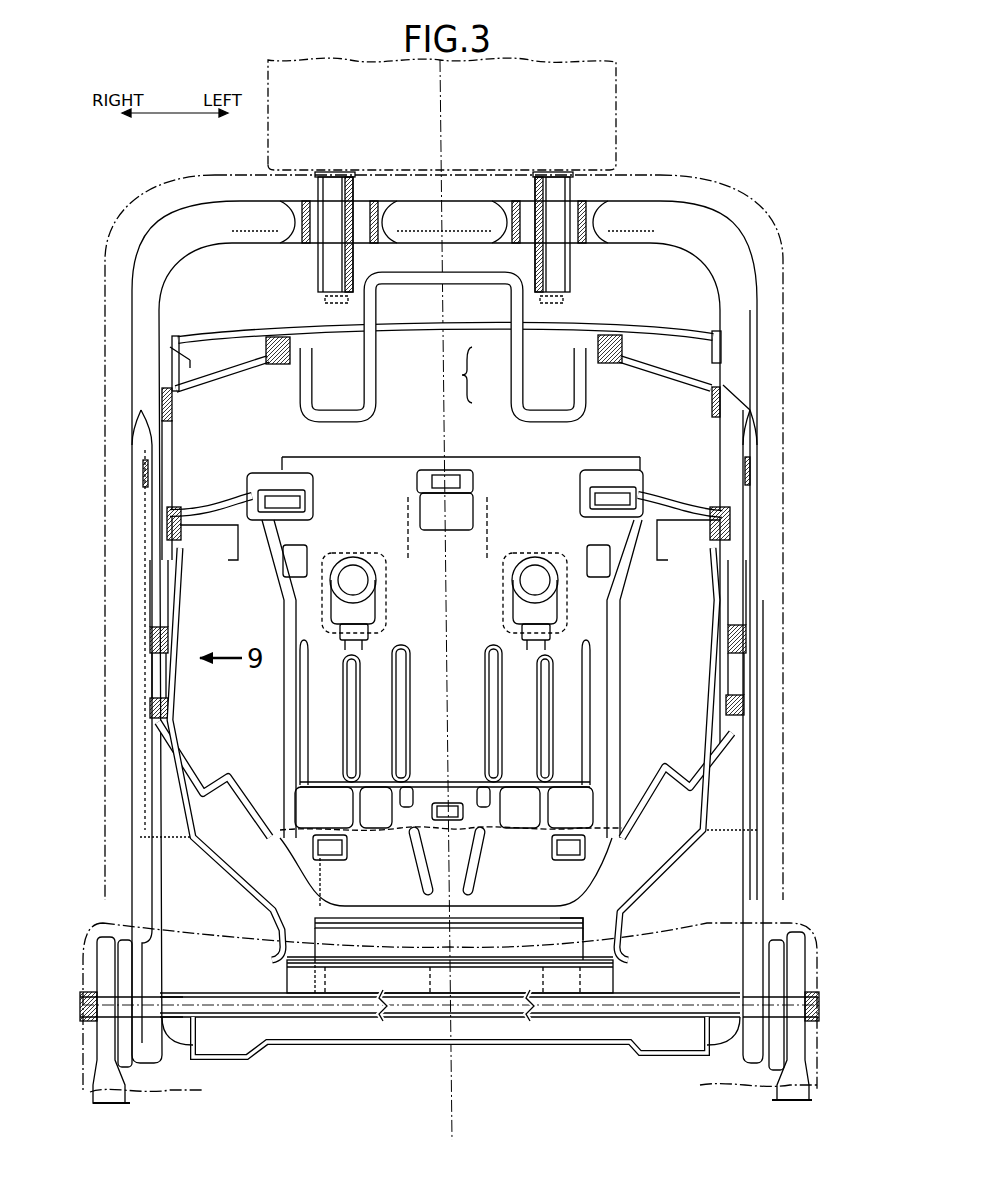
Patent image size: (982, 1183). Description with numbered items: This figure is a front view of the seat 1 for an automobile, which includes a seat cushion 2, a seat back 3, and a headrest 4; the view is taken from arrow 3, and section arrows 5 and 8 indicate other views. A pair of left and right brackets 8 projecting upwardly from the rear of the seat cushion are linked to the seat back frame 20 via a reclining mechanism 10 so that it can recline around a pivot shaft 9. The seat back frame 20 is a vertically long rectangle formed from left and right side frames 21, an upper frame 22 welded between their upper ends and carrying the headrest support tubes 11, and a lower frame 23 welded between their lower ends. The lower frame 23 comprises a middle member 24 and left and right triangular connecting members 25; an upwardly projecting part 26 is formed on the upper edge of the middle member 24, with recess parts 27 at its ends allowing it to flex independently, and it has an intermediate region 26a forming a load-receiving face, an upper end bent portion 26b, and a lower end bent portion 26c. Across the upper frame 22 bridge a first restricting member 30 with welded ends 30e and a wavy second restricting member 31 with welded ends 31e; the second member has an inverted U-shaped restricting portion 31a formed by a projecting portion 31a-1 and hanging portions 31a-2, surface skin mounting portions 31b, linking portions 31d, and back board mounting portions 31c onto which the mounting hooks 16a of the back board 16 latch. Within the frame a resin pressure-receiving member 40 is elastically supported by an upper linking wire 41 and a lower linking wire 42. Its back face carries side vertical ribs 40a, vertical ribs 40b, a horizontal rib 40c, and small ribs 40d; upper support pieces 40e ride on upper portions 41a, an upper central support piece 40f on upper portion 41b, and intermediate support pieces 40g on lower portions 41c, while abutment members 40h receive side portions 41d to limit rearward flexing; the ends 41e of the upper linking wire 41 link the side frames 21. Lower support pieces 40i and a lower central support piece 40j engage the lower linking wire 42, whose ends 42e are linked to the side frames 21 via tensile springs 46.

The seat 1 is at (667, 135).
The seat cushion 2 is at (720, 916).
The seat back 3 is at (795, 627).
The headrest 4 is at (619, 93).
The section line V-V 5 is at (400, 93).
The bracket 8 is at (122, 580).
The pivot shaft 9 is at (557, 972).
The reclining mechanism 10 is at (761, 1063).
The headrest support tube 11 is at (321, 276).
The back board 16 is at (168, 318).
The mounting hook 16a is at (279, 340).
The seat back frame 20 is at (461, 608).
The side frame 21 is at (112, 672).
The upper frame 22 is at (660, 180).
The lower frame 23 is at (544, 1053).
The middle member 24 is at (410, 982).
The connecting member 25 is at (230, 893).
The projecting part 26 is at (387, 910).
The intermediate region 26a is at (360, 962).
The upper end bent portion 26b is at (574, 913).
The lower end bent portion 26c is at (477, 965).
The recess part 27 is at (287, 957).
The first restricting member 30 is at (234, 338).
The end of first restricting member 30e is at (188, 360).
The second restricting member 31 is at (465, 262).
The restricting portion 31a is at (484, 375).
The projecting portion 31a-1 is at (411, 286).
The hanging portion 31a-2 is at (518, 352).
The surface skin mounting portion 31b is at (338, 423).
The back board mounting portion 31c is at (303, 350).
The linking portion 31d is at (307, 390).
The end of second restricting member 31e is at (178, 415).
The pressure-receiving member 40 is at (450, 665).
The side vertical rib 40a is at (283, 732).
The vertical rib 40b is at (397, 735).
The horizontal rib 40c is at (477, 773).
The small rib 40d is at (437, 870).
The upper support piece 40e is at (296, 506).
The upper central support piece 40f is at (437, 483).
The intermediate support piece 40g is at (346, 643).
The abutment member 40h is at (302, 557).
The lower support piece 40i is at (330, 849).
The lower central support piece 40j is at (437, 805).
The upper linking wire 41 is at (662, 494).
The upper portion of upper linking wire 41a is at (284, 495).
The upper portion of upper linking wire 41b is at (450, 503).
The lower portion of upper linking wire 41c is at (525, 642).
The side portion of upper linking wire 41d is at (322, 600).
The end of upper linking wire 41e is at (185, 550).
The lower linking wire 42 is at (665, 764).
The end of lower linking wire 42e is at (720, 753).
The tensile spring 46 is at (170, 708).